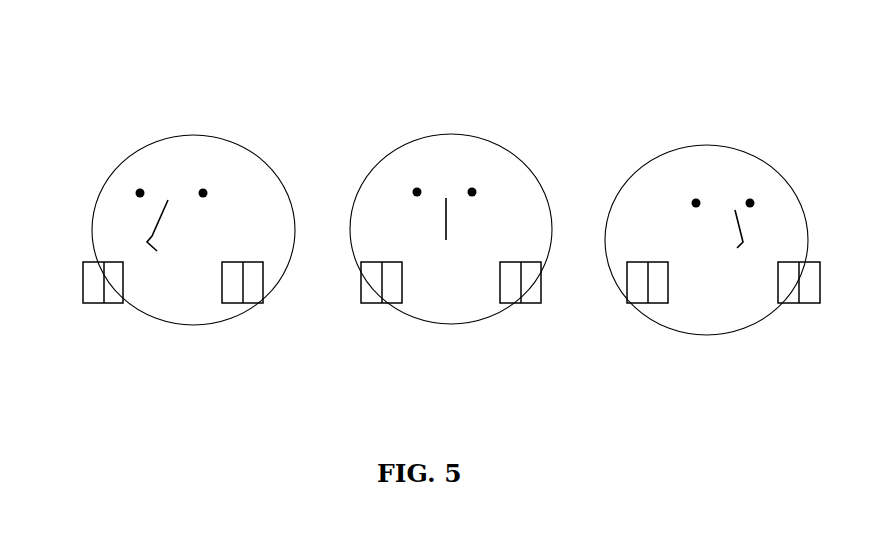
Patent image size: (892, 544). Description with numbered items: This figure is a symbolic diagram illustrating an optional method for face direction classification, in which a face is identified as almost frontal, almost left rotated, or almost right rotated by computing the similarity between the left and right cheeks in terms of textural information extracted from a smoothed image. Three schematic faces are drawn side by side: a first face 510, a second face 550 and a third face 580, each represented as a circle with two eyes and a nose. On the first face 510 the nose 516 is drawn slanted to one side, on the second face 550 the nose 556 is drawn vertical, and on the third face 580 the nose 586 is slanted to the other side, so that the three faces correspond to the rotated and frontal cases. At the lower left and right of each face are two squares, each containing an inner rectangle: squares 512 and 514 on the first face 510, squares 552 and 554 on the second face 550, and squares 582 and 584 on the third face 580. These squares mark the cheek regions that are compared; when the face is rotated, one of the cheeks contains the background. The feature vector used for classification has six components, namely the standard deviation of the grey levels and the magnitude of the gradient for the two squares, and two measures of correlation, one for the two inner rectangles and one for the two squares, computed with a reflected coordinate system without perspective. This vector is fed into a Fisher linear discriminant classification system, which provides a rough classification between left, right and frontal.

The face display with first expression 510 is at (172, 116).
The left ear element 512 is at (95, 305).
The right ear element 514 is at (260, 303).
The nose indicator 516 is at (150, 235).
The face display with second expression 550 is at (464, 114).
The left ear element 552 is at (373, 304).
The right ear element 554 is at (530, 303).
The nose indicator 556 is at (443, 223).
The face display with third expression 580 is at (723, 126).
The left ear element 582 is at (642, 303).
The right ear element 584 is at (790, 303).
The nose indicator 586 is at (736, 246).